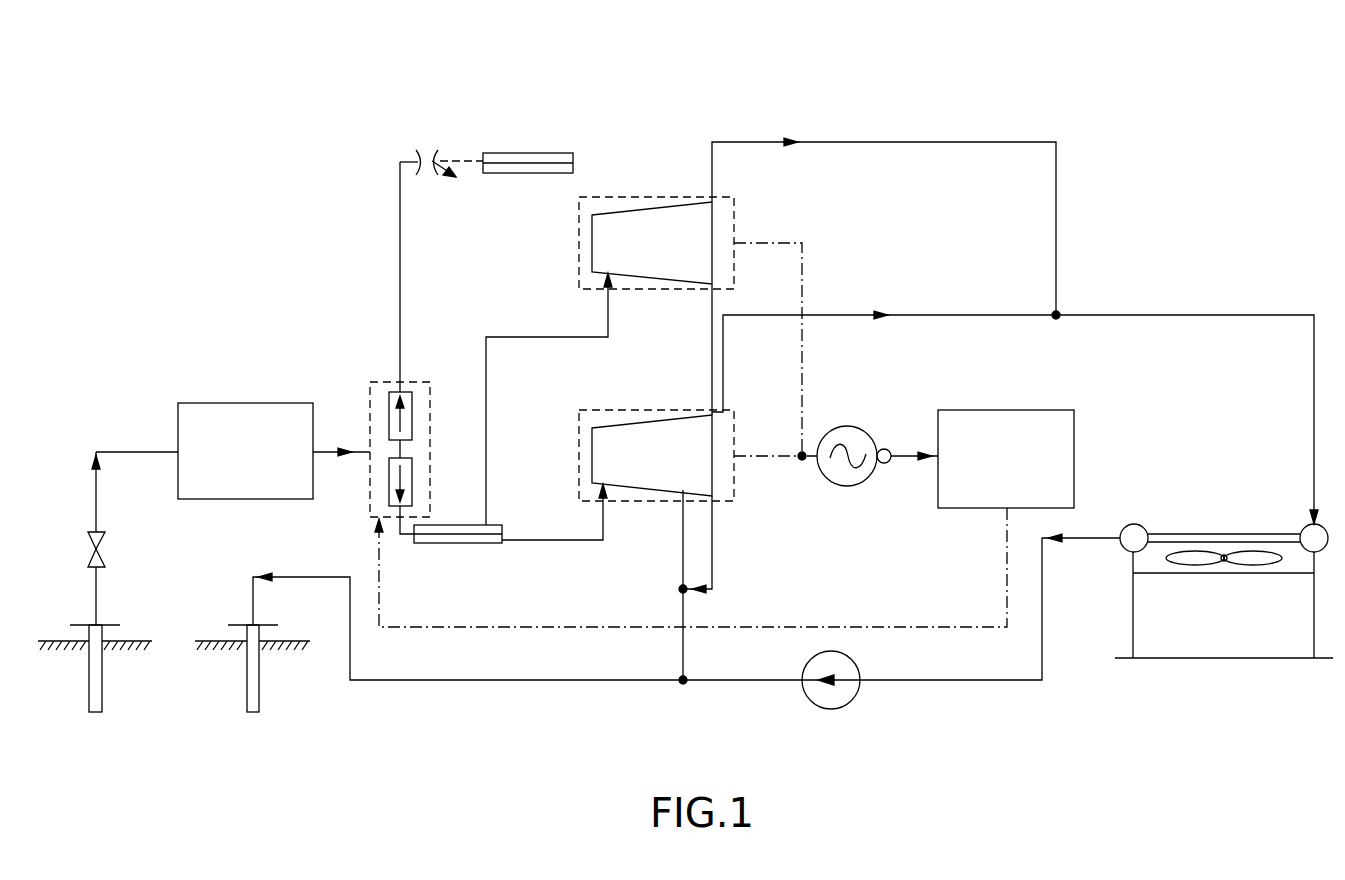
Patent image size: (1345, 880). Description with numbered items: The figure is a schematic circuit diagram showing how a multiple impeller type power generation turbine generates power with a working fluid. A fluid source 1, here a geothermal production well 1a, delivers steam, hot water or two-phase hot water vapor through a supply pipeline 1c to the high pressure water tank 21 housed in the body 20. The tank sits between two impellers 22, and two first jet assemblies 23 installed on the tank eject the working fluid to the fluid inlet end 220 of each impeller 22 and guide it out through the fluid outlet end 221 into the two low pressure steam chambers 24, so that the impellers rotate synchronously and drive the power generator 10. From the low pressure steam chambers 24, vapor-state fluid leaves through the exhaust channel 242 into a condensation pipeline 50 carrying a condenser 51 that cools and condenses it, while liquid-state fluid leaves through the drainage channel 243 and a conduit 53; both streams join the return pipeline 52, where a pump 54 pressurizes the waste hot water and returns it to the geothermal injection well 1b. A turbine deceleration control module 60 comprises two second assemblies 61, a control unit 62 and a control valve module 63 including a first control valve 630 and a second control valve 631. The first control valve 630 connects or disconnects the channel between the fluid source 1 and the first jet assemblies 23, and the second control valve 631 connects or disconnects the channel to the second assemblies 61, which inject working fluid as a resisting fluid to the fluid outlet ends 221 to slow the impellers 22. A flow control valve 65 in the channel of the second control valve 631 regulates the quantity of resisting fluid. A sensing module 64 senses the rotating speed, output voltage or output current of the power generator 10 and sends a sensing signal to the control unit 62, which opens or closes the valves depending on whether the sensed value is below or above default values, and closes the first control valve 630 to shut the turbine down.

The fluid source 1 is at (235, 562).
The geothermal production well 1a is at (96, 625).
The geothermal injection well 1b is at (248, 625).
The supply pipeline 1c is at (136, 452).
The power generator 10 is at (845, 427).
The body 20 is at (736, 112).
The high pressure water tank 21 is at (228, 412).
The impeller 22 is at (690, 212).
The first jet assembly 23 is at (458, 543).
The low pressure steam chamber 24 is at (657, 197).
The condensation pipeline 50 is at (1224, 487).
The condenser 51 is at (1224, 604).
The return pipeline 52 is at (985, 683).
The conduit 53 is at (683, 612).
The pump 54 is at (815, 687).
The turbine deceleration control module 60 is at (1097, 414).
The second assembly 61 is at (520, 152).
The control unit 62 is at (995, 412).
The control valve module 63 is at (360, 349).
The sensing module 64 is at (886, 464).
The flow control valve 65 is at (414, 154).
The fluid inlet end 220 is at (670, 283).
The fluid outlet end 221 is at (704, 201).
The exhaust channel 242 is at (712, 200).
The drainage channel 243 is at (712, 282).
The first control valve 630 is at (389, 497).
The second control valve 631 is at (389, 414).